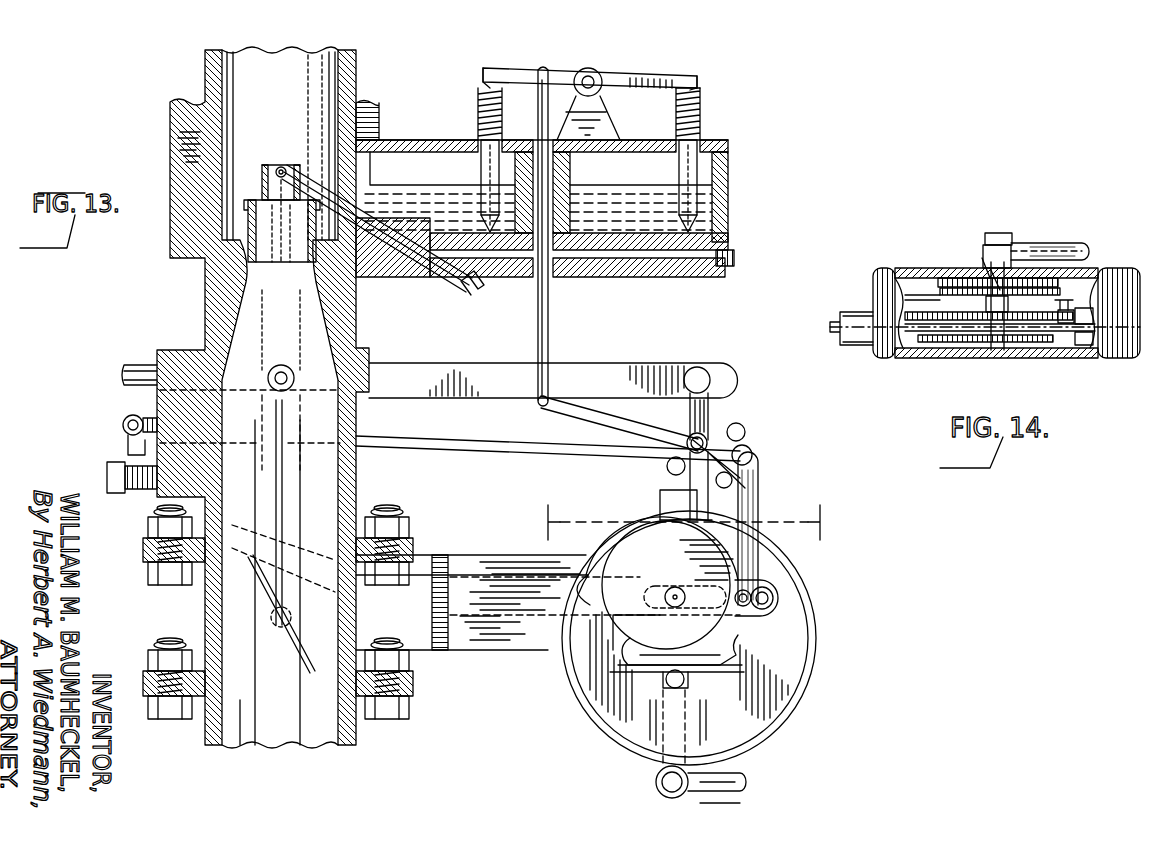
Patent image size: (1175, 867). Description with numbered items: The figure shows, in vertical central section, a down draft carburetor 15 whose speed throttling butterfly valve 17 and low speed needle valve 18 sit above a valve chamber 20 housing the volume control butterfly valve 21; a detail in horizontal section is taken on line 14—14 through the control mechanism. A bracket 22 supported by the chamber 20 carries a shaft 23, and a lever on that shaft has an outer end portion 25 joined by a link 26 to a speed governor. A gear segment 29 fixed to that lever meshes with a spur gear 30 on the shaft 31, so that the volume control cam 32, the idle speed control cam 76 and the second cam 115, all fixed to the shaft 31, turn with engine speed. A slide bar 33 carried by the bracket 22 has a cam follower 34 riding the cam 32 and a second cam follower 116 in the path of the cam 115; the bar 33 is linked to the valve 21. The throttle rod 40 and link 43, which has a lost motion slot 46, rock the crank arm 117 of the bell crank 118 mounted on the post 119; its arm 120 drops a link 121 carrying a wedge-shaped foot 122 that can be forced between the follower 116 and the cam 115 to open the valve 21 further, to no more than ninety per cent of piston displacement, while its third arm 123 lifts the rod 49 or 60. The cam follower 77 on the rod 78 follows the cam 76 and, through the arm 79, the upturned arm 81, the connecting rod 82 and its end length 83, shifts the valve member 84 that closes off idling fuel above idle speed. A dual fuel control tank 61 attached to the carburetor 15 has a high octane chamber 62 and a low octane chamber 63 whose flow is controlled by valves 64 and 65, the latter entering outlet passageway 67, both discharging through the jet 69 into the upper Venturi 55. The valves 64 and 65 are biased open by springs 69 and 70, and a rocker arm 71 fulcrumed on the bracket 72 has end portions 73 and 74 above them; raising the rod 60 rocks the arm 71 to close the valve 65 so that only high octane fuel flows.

In FIG. 13, the down draft carburetor 15 is at (358, 79).
In FIG. 13, the upper Venturi 55 is at (278, 168).
In FIG. 13, the jet 69 is at (312, 205).
In FIG. 13, the end portion of rocker arm 73 is at (483, 70).
In FIG. 13, the bracket 72 is at (600, 96).
In FIG. 13, the rocker arm 71 is at (648, 76).
In FIG. 13, the end portion of rocker arm 74 is at (694, 84).
In FIG. 13, the spring 70 is at (703, 110).
In FIG. 13, the chamber 62 is at (430, 160).
In FIG. 13, the valve 64 is at (488, 170).
In FIG. 13, the chamber 63 is at (637, 160).
In FIG. 13, the valve 65 is at (686, 170).
In FIG. 13, the dual fuel control tank 61 is at (728, 208).
In FIG. 13, the outlet passageway 67 is at (687, 235).
In FIG. 13, the rod 49 is at (538, 322).
In FIG. 13, the rod 60 is at (547, 352).
In FIG. 13, the throttle connecting link 43 is at (460, 345).
In FIG. 13, the slot 46 is at (727, 382).
In FIG. 13, the slide bar 33 is at (548, 605).
In FIG. 14, the slide bar 33 is at (843, 330).
In FIG. 13, the rod 40 is at (125, 370).
In FIG. 13, the valve member 84 is at (128, 418).
In FIG. 13, the end length 83 is at (128, 432).
In FIG. 13, the adjustable needle valve 18 is at (112, 493).
In FIG. 13, the connecting rod 82 is at (450, 440).
In FIG. 13, the third arm 123 is at (577, 412).
In FIG. 13, the bell crank 118 is at (684, 432).
In FIG. 13, the crank arm 117 is at (712, 415).
In FIG. 13, the arm 120 is at (745, 434).
In FIG. 13, the upturned arm 81 is at (753, 455).
In FIG. 13, the rod 78 is at (687, 476).
In FIG. 14, the rod 78 is at (992, 280).
In FIG. 13, the arm 79 is at (667, 465).
In FIG. 13, the post 119 is at (688, 484).
In FIG. 13, the link 121 is at (755, 500).
In FIG. 14, the link 121 is at (1068, 302).
In FIG. 13, the section line 14 is at (685, 514).
In FIG. 13, the cam follower 77 is at (673, 520).
In FIG. 14, the cam follower 77 is at (982, 258).
In FIG. 13, the second cam 115 is at (597, 572).
In FIG. 14, the second cam 115 is at (907, 313).
In FIG. 13, the volume control cam 32 is at (628, 551).
In FIG. 14, the volume control cam 32 is at (935, 340).
In FIG. 13, the shaft 31 is at (686, 597).
In FIG. 14, the shaft 31 is at (1012, 243).
In FIG. 13, the cam follower 34 is at (773, 595).
In FIG. 14, the cam follower 34 is at (1083, 345).
In FIG. 13, the wedge-shaped foot 122 is at (744, 610).
In FIG. 14, the wedge-shaped foot 122 is at (1076, 310).
In FIG. 13, the idle speed control cam 76 is at (727, 652).
In FIG. 14, the idle speed control cam 76 is at (947, 272).
In FIG. 13, the gear segment 29 is at (683, 679).
In FIG. 14, the gear segment 29 is at (952, 267).
In FIG. 13, the valve chamber 20 is at (318, 617).
In FIG. 13, the volume control valve 21 is at (297, 657).
In FIG. 13, the butterfly valve 17 is at (277, 512).
In FIG. 14, the spur gear 30 is at (977, 268).
In FIG. 14, the outer end portion 25 is at (1000, 233).
In FIG. 14, the shaft 23 is at (1007, 242).
In FIG. 14, the link 26 is at (1098, 228).
In FIG. 14, the second cam follower 116 is at (1093, 313).
In FIG. 14, the bracket 22 is at (862, 345).